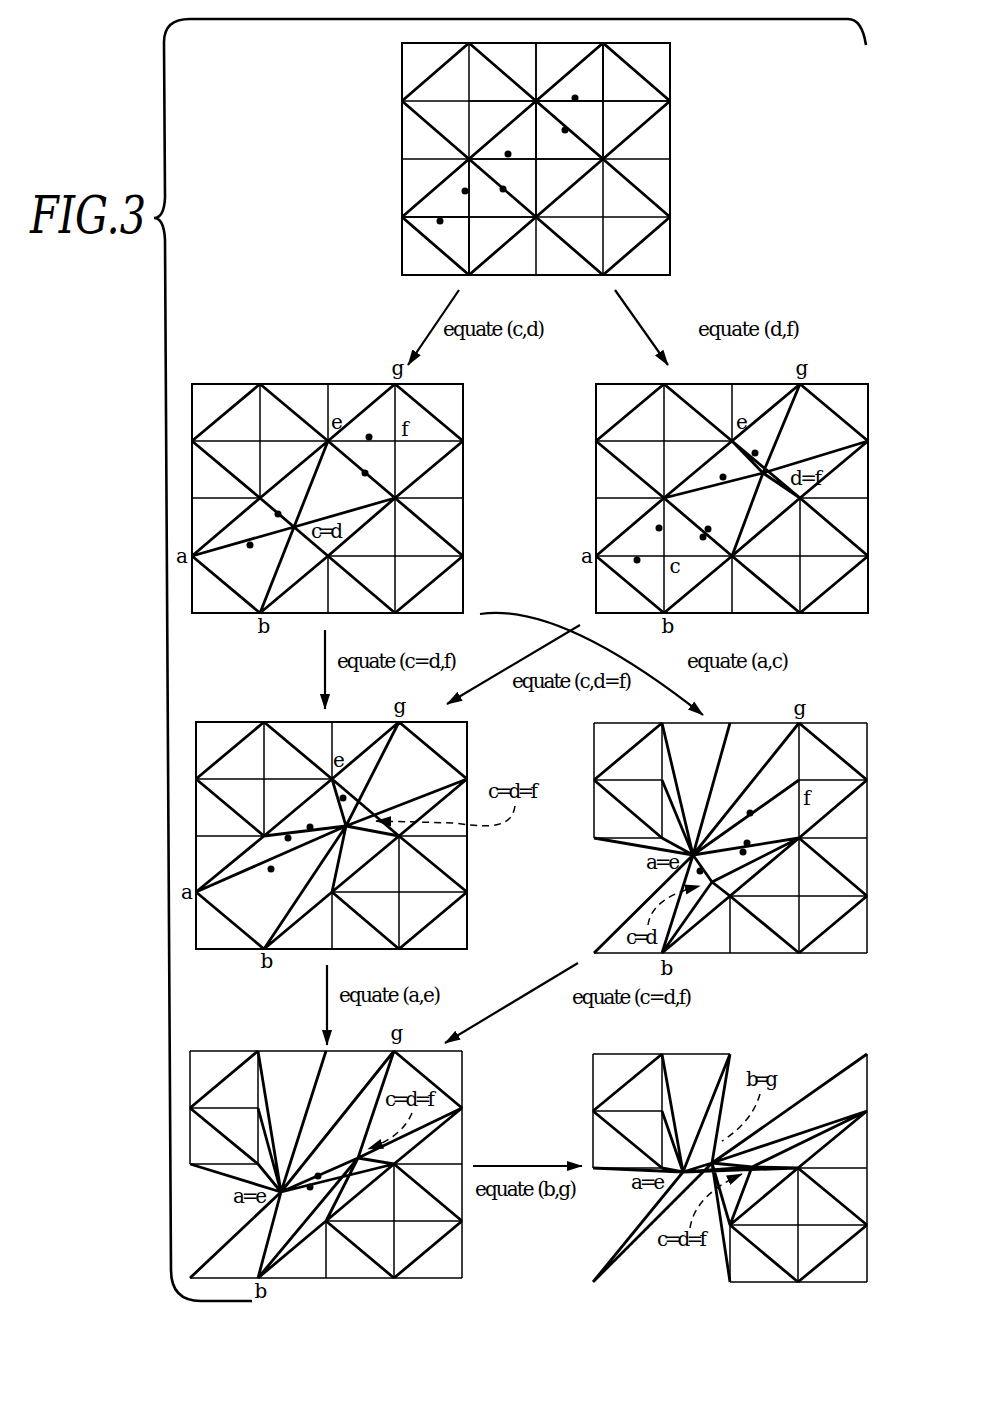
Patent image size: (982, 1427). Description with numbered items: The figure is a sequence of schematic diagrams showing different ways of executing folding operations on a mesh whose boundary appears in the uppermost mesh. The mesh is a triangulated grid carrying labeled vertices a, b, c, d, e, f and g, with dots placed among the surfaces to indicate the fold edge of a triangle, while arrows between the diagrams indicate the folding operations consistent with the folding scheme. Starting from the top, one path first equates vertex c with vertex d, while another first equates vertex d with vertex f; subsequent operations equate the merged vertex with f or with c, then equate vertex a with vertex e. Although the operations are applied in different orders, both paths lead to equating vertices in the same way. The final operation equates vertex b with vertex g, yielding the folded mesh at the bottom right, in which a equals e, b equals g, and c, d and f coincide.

The mesh vertex a is at (428, 217).
The mesh vertex b is at (469, 258).
The mesh vertex c is at (469, 217).
The mesh vertex d is at (536, 159).
The mesh vertex e is at (536, 101).
The mesh vertex f is at (603, 101).
The mesh vertex g is at (603, 60).